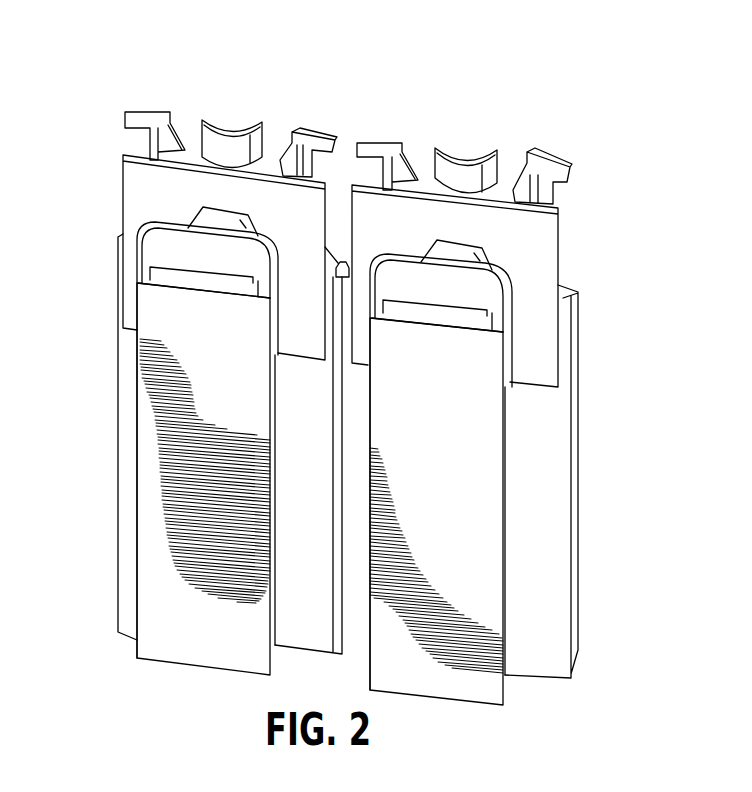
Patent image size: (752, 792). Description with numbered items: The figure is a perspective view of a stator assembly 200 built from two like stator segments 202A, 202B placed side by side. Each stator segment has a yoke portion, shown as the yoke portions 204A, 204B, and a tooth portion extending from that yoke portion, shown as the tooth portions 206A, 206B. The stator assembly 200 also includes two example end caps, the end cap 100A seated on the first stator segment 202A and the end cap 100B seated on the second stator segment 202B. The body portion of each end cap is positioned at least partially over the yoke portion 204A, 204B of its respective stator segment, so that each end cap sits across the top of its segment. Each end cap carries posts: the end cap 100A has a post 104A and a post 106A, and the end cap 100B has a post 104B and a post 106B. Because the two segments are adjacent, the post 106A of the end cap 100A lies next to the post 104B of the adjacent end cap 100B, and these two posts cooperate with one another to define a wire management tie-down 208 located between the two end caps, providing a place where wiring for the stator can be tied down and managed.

The stator assembly 200 is at (608, 176).
The end cap 100A is at (190, 148).
The end cap 100B is at (548, 257).
The post 104A is at (125, 127).
The post 104B is at (390, 143).
The post 106A is at (331, 138).
The post 106B is at (558, 168).
The stator segment 202A is at (150, 410).
The stator segment 202B is at (485, 363).
The yoke portion 204A is at (118, 381).
The yoke portion 204B is at (542, 405).
The tooth portion 206A is at (153, 640).
The tooth portion 206B is at (430, 675).
The wire management tie-down 208 is at (353, 137).